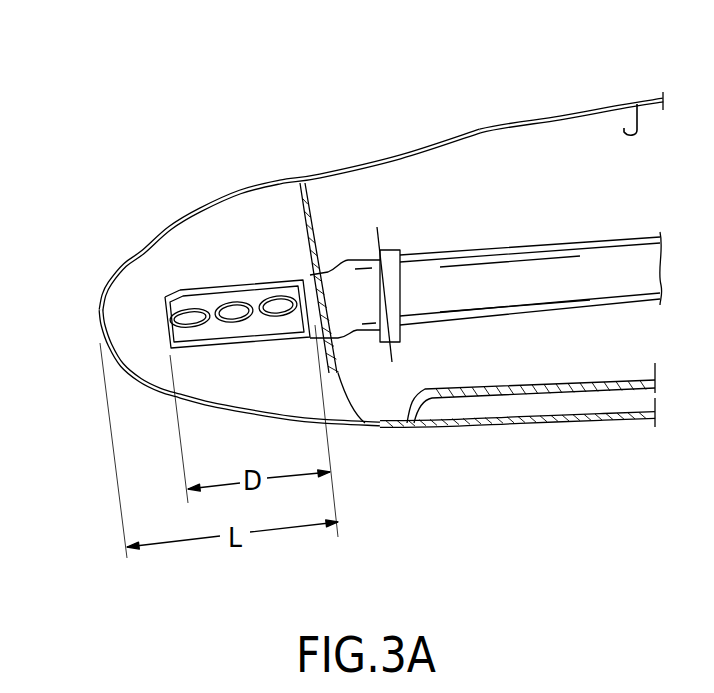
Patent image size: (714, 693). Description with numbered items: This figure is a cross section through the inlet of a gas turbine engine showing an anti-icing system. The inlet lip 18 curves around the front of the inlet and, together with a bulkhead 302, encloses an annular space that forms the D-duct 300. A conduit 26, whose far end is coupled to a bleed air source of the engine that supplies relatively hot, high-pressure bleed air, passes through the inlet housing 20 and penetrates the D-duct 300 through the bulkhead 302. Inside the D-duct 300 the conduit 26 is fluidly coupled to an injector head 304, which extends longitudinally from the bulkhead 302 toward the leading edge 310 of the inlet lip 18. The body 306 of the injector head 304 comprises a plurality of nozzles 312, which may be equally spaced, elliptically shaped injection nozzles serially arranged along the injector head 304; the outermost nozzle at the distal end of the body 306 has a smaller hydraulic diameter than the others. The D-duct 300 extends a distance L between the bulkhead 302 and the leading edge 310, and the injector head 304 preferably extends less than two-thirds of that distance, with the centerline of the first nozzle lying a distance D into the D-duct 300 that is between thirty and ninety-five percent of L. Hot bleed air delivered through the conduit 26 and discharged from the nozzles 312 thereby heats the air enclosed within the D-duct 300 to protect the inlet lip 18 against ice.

The D-duct 300 is at (310, 96).
The inlet lip 18 is at (272, 188).
The inlet housing 20 is at (529, 124).
The conduit 26 is at (567, 242).
The bulkhead 302 is at (303, 228).
The injector head 304 is at (205, 286).
The body 306 is at (166, 316).
The leading edge 310 is at (100, 330).
The nozzles 312 is at (278, 298).